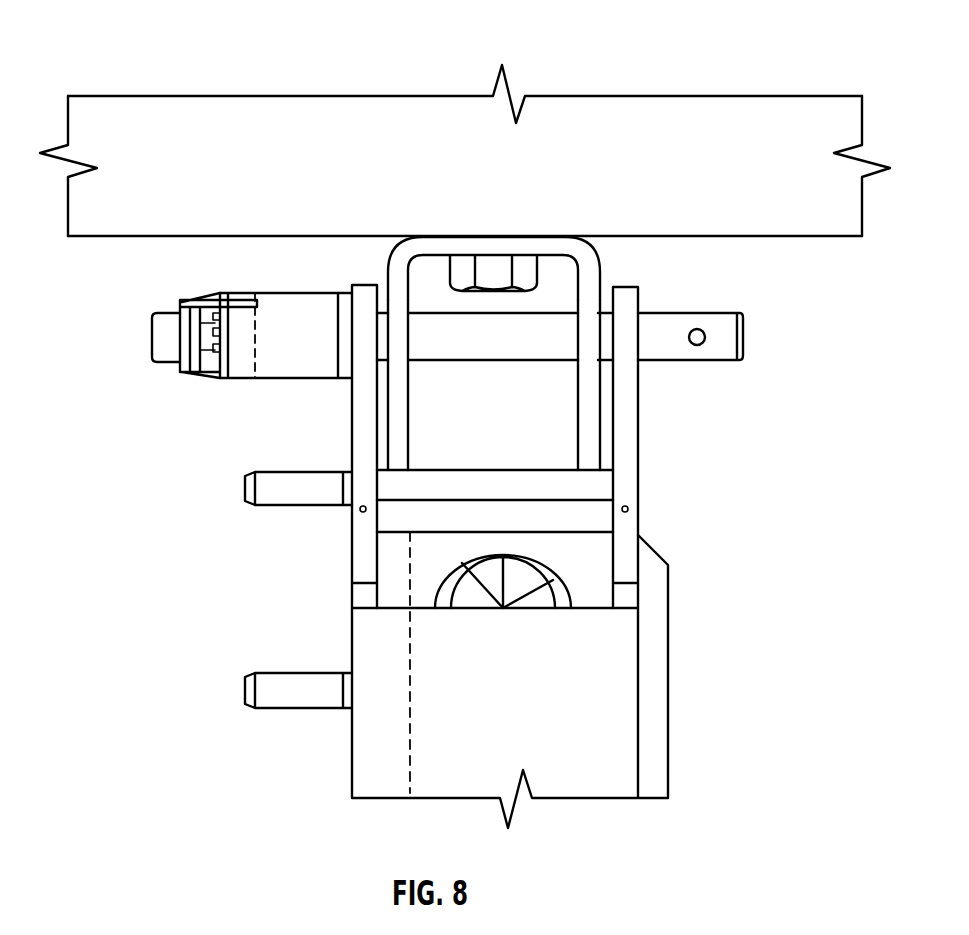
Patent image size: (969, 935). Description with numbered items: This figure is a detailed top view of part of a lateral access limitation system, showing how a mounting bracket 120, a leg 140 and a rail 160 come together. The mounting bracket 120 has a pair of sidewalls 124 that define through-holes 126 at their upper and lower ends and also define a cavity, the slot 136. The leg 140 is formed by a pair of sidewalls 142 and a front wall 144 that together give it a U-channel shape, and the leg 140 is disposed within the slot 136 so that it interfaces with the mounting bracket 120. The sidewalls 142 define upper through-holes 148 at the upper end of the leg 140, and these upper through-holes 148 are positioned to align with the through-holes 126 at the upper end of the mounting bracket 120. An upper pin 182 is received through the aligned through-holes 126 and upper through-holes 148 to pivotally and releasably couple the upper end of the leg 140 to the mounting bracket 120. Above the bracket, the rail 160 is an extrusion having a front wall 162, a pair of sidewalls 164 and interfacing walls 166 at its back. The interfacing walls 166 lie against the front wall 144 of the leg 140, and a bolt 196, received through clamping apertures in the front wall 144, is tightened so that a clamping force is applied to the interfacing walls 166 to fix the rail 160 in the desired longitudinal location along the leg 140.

The mounting bracket 120 is at (686, 715).
The sidewalls 124 is at (351, 383).
The through-holes 126 is at (641, 308).
The slot 136 is at (539, 457).
The leg 140 is at (488, 335).
The sidewalls 142 is at (397, 412).
The front wall 144 is at (446, 247).
The upper through-holes 148 is at (575, 369).
The rail 160 is at (457, 145).
The front wall 162 is at (98, 95).
The sidewalls 164 is at (273, 102).
The interfacing walls 166 is at (87, 237).
The upper pin 182 is at (179, 382).
The bolt 196 is at (495, 265).